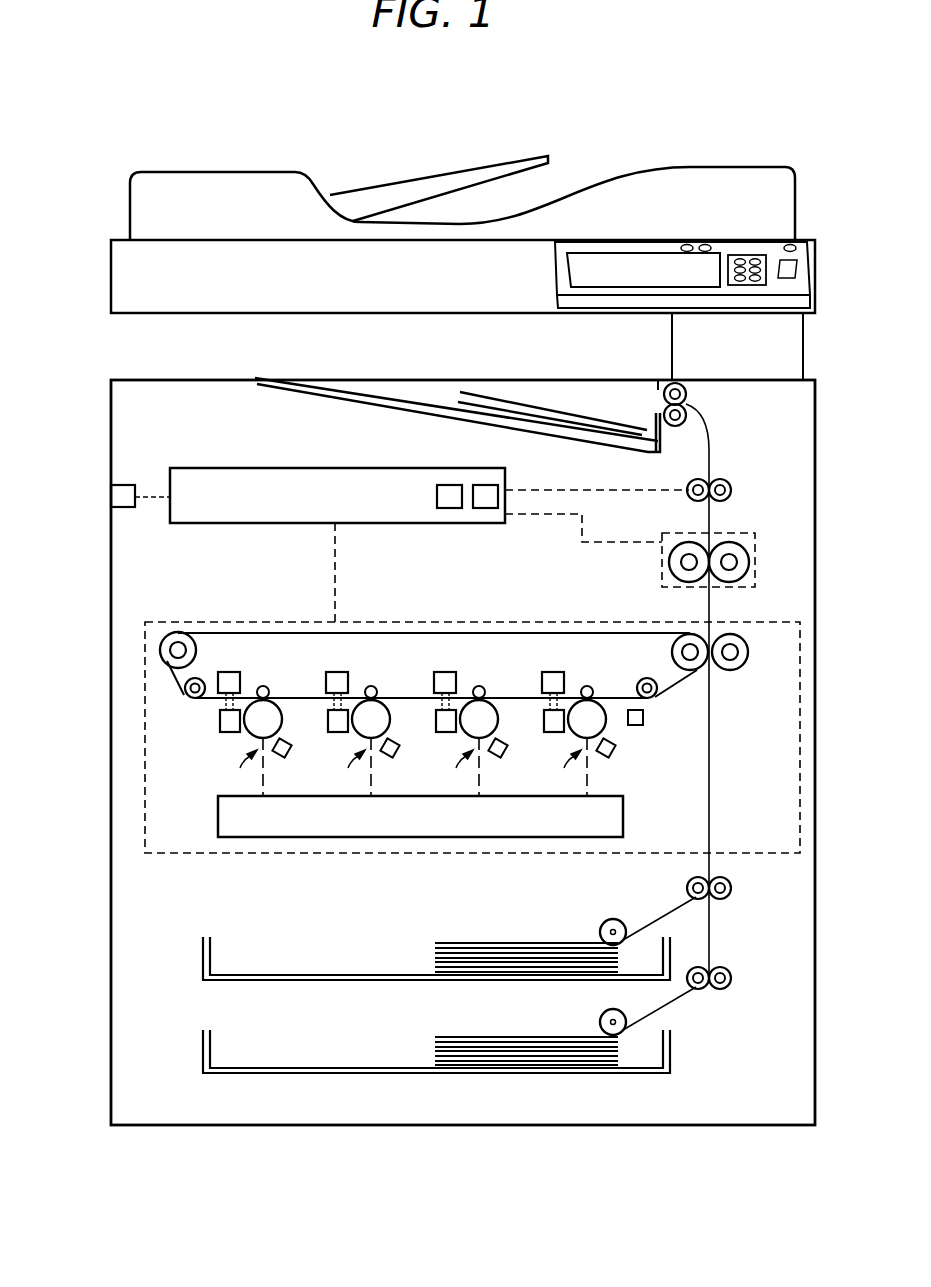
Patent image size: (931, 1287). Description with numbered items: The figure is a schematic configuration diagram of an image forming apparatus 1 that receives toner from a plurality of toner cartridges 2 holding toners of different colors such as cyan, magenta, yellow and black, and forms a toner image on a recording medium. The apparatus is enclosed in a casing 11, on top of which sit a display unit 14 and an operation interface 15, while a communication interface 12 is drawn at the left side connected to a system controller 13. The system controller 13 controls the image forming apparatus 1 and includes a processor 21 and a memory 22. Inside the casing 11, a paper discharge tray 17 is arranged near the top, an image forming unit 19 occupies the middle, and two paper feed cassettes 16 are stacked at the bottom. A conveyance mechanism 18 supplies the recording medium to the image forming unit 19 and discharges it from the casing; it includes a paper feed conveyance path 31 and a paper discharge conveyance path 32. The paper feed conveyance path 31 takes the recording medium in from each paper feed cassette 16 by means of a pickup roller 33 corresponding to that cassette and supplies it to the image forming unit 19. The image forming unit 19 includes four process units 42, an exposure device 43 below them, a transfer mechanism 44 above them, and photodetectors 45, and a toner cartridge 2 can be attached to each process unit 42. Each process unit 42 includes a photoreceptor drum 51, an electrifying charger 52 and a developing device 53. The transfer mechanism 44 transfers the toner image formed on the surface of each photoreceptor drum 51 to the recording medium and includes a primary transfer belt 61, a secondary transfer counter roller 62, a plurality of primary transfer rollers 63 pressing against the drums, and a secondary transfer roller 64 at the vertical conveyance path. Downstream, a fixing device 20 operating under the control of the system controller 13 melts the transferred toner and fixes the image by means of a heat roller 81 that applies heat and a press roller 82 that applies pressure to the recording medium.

The image forming apparatus 1 is at (426, 130).
The casing 11 is at (111, 395).
The communication interface 12 is at (131, 485).
The system controller 13 is at (313, 468).
The display unit 14 is at (601, 253).
The operation interface 15 is at (748, 255).
The paper feed cassette 16 is at (203, 949).
The paper discharge tray 17 is at (345, 390).
The conveyance mechanism 18 is at (729, 463).
The image forming unit 19 is at (588, 622).
The fixing device 20 is at (758, 555).
The processor 21 is at (450, 508).
The memory 22 is at (486, 508).
The toner cartridge 2 is at (228, 672).
The paper feed conveyance path 31 is at (712, 868).
The paper discharge conveyance path 32 is at (712, 440).
The pickup roller 33 is at (600, 920).
The process unit 42 is at (402, 773).
The exposure device 43 is at (218, 809).
The transfer mechanism 44 is at (412, 615).
The photodetector 45 is at (636, 725).
The photoreceptor drum 51 is at (280, 698).
The electrifying charger 52 is at (288, 758).
The developing device 53 is at (228, 732).
The primary transfer belt 61 is at (543, 633).
The secondary transfer counter roller 62 is at (672, 657).
The primary transfer roller 63 is at (263, 686).
The secondary transfer roller 64 is at (747, 667).
The heat roller 81 is at (667, 533).
The press roller 82 is at (750, 531).